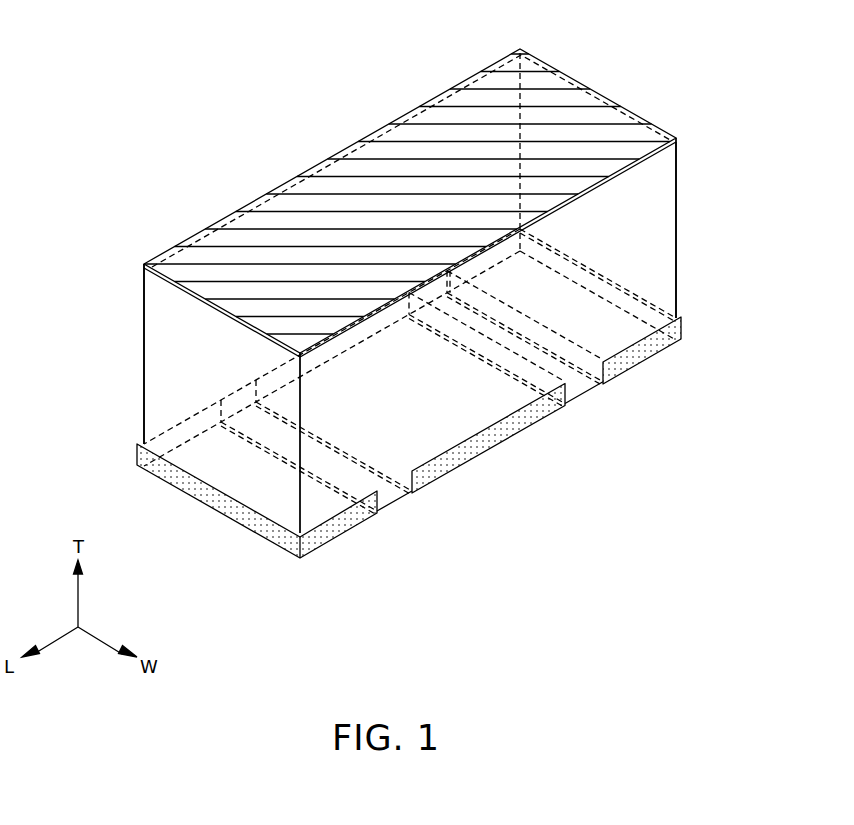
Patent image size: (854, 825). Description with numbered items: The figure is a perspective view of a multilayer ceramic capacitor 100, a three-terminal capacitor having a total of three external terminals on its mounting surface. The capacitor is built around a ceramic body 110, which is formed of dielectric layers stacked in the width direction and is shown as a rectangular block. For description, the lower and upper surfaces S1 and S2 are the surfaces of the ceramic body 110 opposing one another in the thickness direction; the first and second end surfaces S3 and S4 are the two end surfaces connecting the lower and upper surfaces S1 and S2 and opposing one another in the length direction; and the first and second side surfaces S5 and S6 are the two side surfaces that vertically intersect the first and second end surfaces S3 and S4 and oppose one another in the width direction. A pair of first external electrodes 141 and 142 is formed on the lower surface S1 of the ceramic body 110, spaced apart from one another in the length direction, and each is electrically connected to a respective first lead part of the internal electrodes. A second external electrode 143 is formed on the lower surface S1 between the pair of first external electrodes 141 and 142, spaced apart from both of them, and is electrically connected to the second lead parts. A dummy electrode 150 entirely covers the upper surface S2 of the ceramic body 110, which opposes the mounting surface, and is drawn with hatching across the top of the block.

The multilayer ceramic capacitor 100 is at (117, 39).
The ceramic body 110 is at (155, 403).
The dummy electrode 150 is at (343, 140).
The first external electrode 141 is at (247, 537).
The first external electrode 142 is at (651, 377).
The second external electrode 143 is at (515, 450).
The lower surface S1 is at (388, 504).
The upper surface S2 is at (268, 232).
The first end surface S3 is at (148, 363).
The second end surface S4 is at (664, 186).
The first side surface S5 is at (664, 246).
The second side surface S6 is at (160, 316).